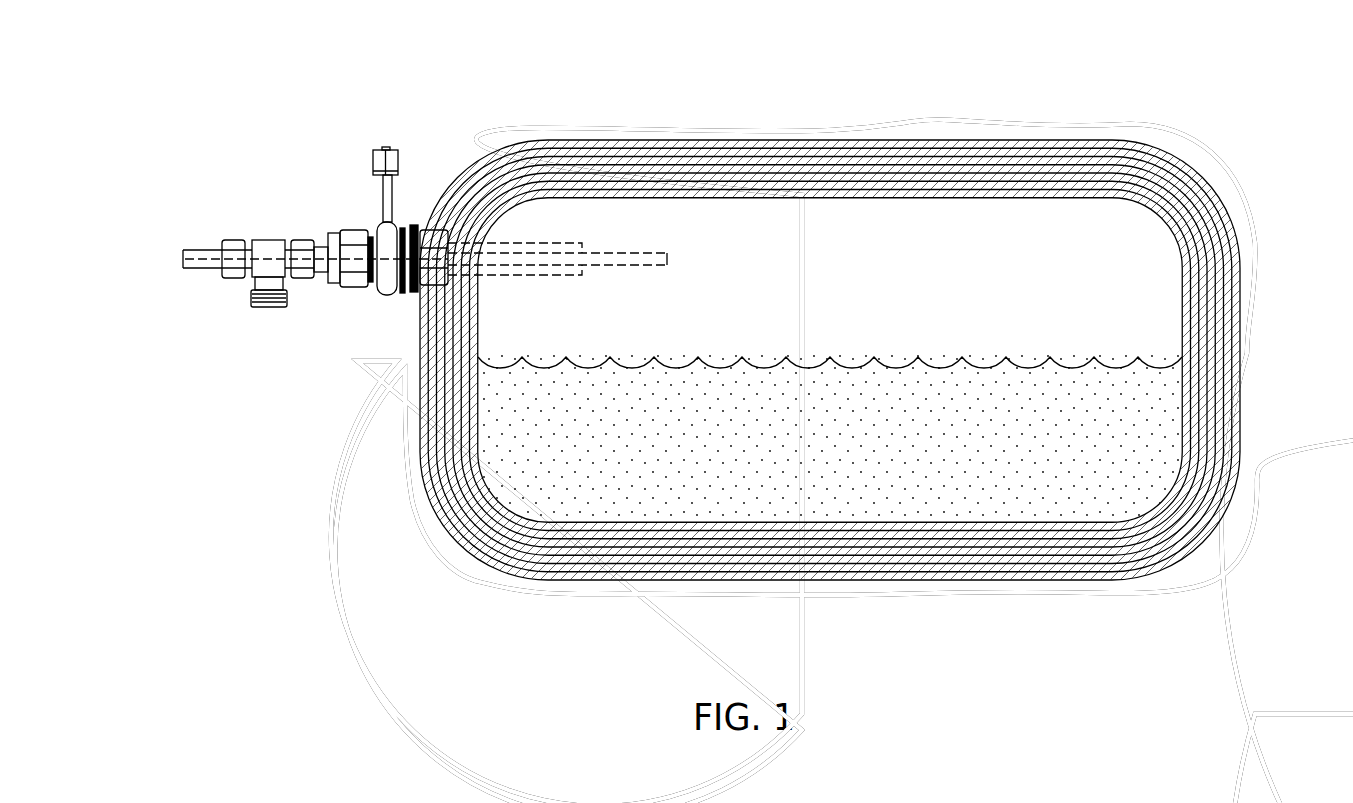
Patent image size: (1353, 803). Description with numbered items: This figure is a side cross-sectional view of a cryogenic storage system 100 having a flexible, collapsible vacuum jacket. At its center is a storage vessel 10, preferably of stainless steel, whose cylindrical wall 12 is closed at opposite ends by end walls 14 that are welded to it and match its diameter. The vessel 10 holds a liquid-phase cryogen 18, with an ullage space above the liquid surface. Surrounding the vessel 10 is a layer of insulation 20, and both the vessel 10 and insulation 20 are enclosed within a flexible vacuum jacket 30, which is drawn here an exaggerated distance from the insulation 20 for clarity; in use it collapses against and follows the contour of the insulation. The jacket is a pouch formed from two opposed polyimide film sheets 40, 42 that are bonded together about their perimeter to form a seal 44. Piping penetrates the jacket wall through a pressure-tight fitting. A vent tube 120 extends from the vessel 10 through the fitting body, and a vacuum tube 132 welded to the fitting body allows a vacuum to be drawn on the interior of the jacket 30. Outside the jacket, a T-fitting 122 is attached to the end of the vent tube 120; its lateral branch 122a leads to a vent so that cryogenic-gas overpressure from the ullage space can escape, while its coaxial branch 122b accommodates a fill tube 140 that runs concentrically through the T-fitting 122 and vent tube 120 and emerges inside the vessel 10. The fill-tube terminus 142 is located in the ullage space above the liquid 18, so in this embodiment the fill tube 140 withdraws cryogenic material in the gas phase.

The fuel tank assembly 100 is at (322, 141).
The storage vessel 10 is at (907, 198).
The cylindrical wall 12 is at (847, 190).
The end walls 14 is at (425, 428).
The cryogenic liquid 18 is at (845, 468).
The insulation 20 is at (775, 173).
The flexible vacuum jacket 30 is at (1257, 262).
The rectangular sheet 40 is at (1000, 125).
The rectangular sheet 42 is at (1084, 596).
The seal 44 is at (1290, 358).
The vent tube 120 is at (560, 277).
The T-fitting 122 is at (228, 292).
The lateral branch 122a is at (284, 288).
The coaxial branch 122b is at (262, 240).
The vacuum tube 132 is at (383, 200).
The fill tube 140 is at (634, 267).
The fill-tube terminus 142 is at (672, 258).